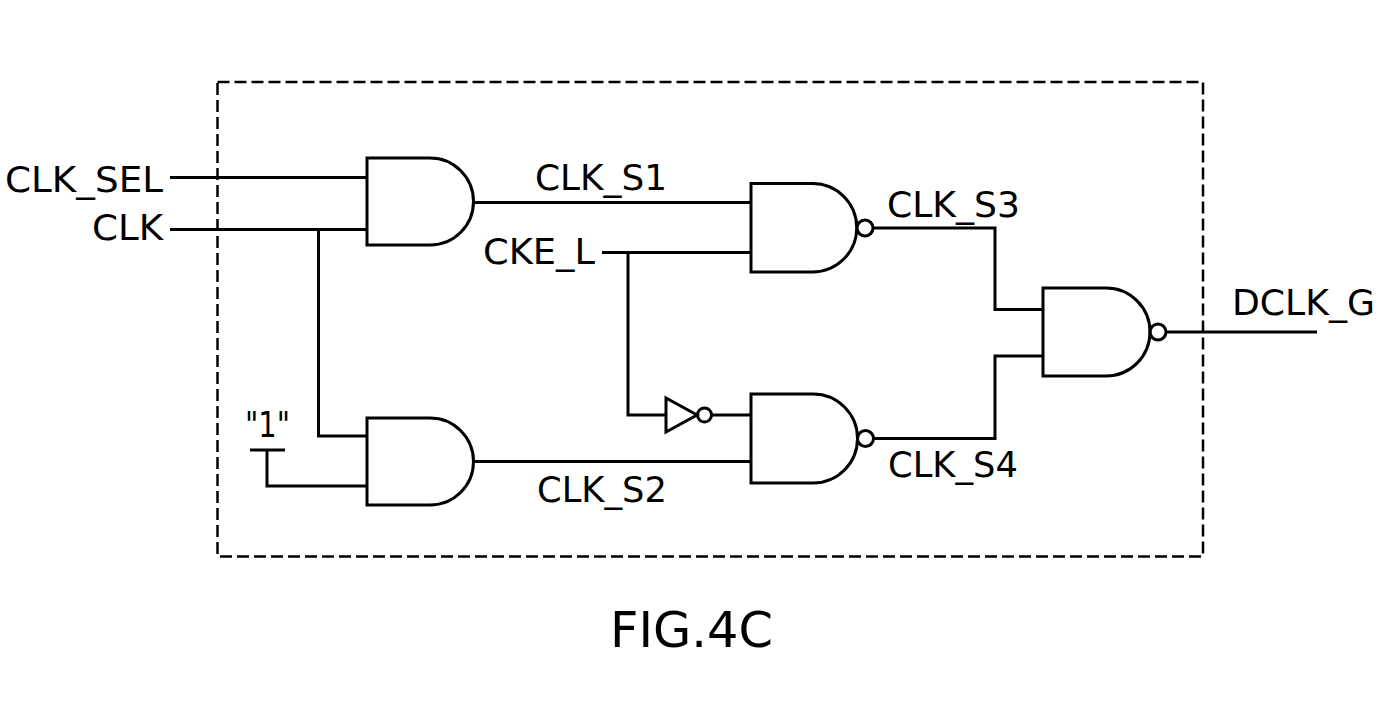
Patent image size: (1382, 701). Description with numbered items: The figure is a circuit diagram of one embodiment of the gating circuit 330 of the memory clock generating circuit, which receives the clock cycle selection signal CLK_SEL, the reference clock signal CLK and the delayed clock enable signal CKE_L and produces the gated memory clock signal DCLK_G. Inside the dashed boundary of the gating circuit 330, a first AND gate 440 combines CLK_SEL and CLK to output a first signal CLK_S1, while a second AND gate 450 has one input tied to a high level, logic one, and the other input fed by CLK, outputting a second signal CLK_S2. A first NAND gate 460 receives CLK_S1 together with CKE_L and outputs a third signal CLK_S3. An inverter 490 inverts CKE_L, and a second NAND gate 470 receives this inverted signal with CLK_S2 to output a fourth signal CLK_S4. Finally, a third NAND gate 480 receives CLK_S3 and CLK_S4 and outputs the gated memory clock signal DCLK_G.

The gating circuit 330 is at (882, 82).
The first AND gate 440 is at (415, 158).
The second AND gate 450 is at (415, 418).
The first NAND gate 460 is at (798, 184).
The second NAND gate 470 is at (797, 394).
The third NAND gate 480 is at (1090, 288).
The inverter 490 is at (679, 399).